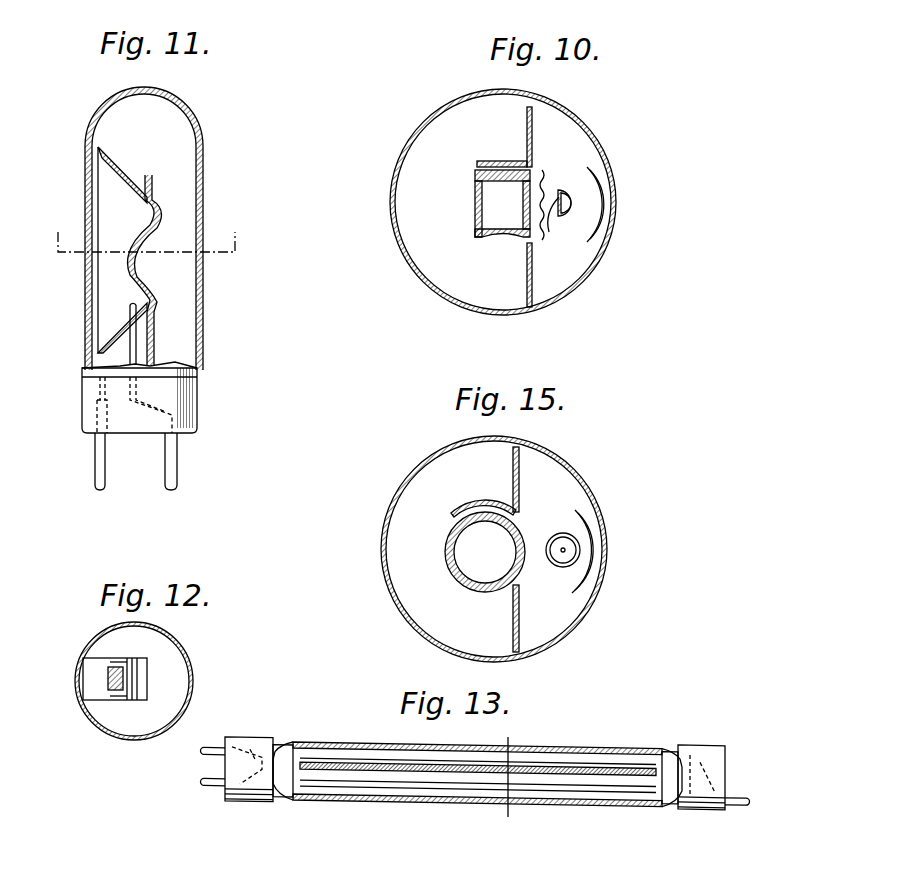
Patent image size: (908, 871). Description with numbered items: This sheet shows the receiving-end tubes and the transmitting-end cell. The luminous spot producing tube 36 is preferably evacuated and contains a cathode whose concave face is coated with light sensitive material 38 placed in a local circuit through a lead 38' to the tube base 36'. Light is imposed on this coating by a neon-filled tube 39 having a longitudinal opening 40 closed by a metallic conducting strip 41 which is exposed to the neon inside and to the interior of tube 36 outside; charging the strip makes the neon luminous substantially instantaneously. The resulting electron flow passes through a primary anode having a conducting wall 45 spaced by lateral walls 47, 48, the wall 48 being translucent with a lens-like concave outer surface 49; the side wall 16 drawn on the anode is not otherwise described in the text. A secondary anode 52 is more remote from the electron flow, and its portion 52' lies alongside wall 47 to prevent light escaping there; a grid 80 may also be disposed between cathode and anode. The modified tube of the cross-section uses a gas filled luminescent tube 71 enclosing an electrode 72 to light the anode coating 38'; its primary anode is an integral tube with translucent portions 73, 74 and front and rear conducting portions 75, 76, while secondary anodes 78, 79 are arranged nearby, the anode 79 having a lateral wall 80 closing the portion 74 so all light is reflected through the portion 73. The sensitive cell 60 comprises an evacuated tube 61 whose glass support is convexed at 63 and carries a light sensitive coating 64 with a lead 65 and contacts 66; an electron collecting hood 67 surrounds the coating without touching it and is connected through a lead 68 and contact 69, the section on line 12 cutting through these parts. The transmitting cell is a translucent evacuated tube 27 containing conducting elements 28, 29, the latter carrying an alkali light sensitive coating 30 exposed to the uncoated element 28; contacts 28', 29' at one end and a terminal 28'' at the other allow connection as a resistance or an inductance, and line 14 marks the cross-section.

In FIG. 11, the sensitive cell 60 is at (190, 135).
In FIG. 11, the tube 61 is at (207, 192).
In FIG. 12, the tube 61 is at (107, 626).
In FIG. 11, the electron collecting hood 67 is at (123, 167).
In FIG. 12, the electron collecting hood 67 is at (143, 668).
In FIG. 11, the convexed portion of the support 63 is at (135, 272).
In FIG. 12, the convexed portion of the support 63 is at (143, 680).
In FIG. 11, the light sensitive coating 64 is at (140, 212).
In FIG. 12, the light sensitive coating 64 is at (113, 680).
In FIG. 11, the lead 65 is at (133, 347).
In FIG. 11, the lead 68 is at (98, 360).
In FIG. 11, the contact 69 is at (95, 467).
In FIG. 11, the contacts 66 is at (177, 465).
In FIG. 11, the section line 12— 12 is at (146, 231).
In FIG. 10, the tube 36 is at (485, 202).
In FIG. 15, the base of the tube / modified tube 36' is at (509, 549).
In FIG. 10, the secondary anode 52 is at (559, 190).
In FIG. 10, the portion of secondary anode 52' is at (500, 140).
In FIG. 10, the lateral wall 47 is at (497, 180).
In FIG. 10, the side wall 16 is at (477, 203).
In FIG. 10, the metallic conducting strip 41 is at (640, 216).
In FIG. 10, the lateral wall 48 is at (497, 228).
In FIG. 10, the concave outer surface 49 is at (500, 233).
In FIG. 10, the wall 45 is at (534, 186).
In FIG. 10, the grid / laterally extending wall 80 is at (547, 183).
In FIG. 15, the grid / laterally extending wall 80 is at (465, 503).
In FIG. 10, the tube 39 is at (593, 199).
In FIG. 10, the light sensitive material 38 is at (625, 191).
In FIG. 10, the longitudinal opening 40 is at (549, 232).
In FIG. 15, the primary anode / translucent portion 73 is at (480, 582).
In FIG. 15, the rear conducting portion 76 is at (446, 555).
In FIG. 15, the front conducting portion 75 is at (519, 581).
In FIG. 15, the translucent portion 74 is at (483, 510).
In FIG. 15, the secondary anode 79 is at (522, 453).
In FIG. 15, the secondary anode 78 is at (517, 637).
In FIG. 15, the electrode 72 is at (565, 550).
In FIG. 15, the gas filled luminescent tube 71 is at (563, 568).
In FIG. 15, the lead / anode coating 38' is at (611, 548).
In FIG. 13, the translucent evacuated tube 27 is at (327, 742).
In FIG. 13, the conducting element 29 is at (478, 751).
In FIG. 13, the contact 29' is at (225, 725).
In FIG. 13, the light sensitive coating 30 is at (427, 772).
In FIG. 13, the conducting element 28 is at (657, 792).
In FIG. 13, the contact 28' is at (228, 789).
In FIG. 13, the terminal 28'' is at (722, 827).
In FIG. 13, the section line 14— 14 is at (504, 774).